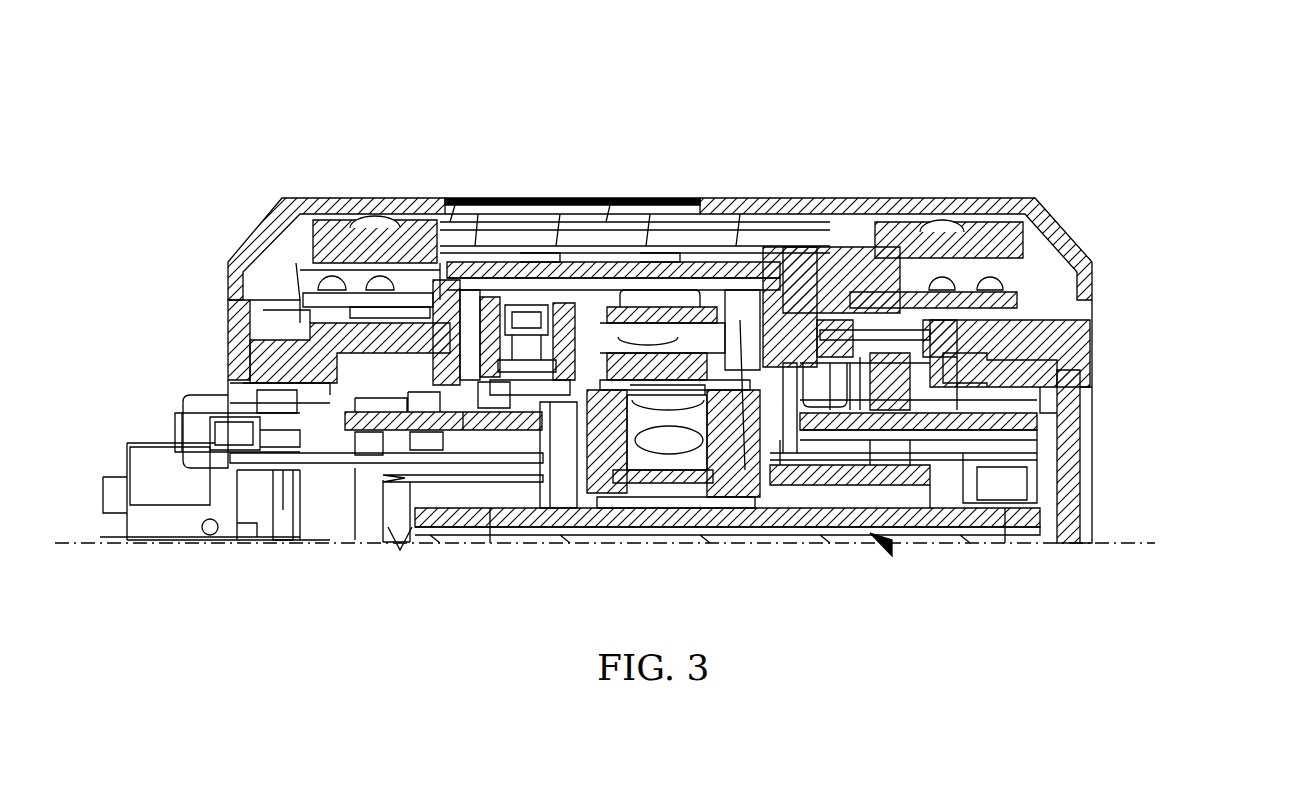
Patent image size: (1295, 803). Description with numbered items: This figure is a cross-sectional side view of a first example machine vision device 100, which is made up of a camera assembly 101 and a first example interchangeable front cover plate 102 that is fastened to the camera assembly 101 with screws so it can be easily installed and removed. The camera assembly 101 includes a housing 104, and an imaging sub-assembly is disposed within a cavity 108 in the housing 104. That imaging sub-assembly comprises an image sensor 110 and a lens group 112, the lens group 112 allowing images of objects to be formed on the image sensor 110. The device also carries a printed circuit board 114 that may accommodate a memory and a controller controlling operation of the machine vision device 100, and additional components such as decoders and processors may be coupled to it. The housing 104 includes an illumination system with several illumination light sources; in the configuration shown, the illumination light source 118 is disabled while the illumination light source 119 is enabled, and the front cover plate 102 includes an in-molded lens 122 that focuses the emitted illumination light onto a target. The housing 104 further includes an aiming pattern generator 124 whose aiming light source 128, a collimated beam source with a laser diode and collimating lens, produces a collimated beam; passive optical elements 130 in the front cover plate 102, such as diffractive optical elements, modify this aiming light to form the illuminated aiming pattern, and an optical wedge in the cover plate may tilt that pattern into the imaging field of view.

The machine vision device 100 is at (130, 102).
The camera assembly 101 is at (1205, 543).
The front cover plate 102 is at (1038, 254).
The housing 104 is at (1082, 398).
The cavity 108 is at (742, 332).
The image sensor 110 is at (656, 500).
The lens group 112 is at (698, 424).
The printed circuit board 114 is at (962, 518).
The illumination light source 118 is at (292, 245).
The illumination light source 119 is at (482, 324).
The in-molded lens 122 is at (384, 218).
The aiming pattern generator 124 is at (396, 320).
The aiming light source 128 is at (597, 380).
The passive optical elements 130 is at (523, 242).